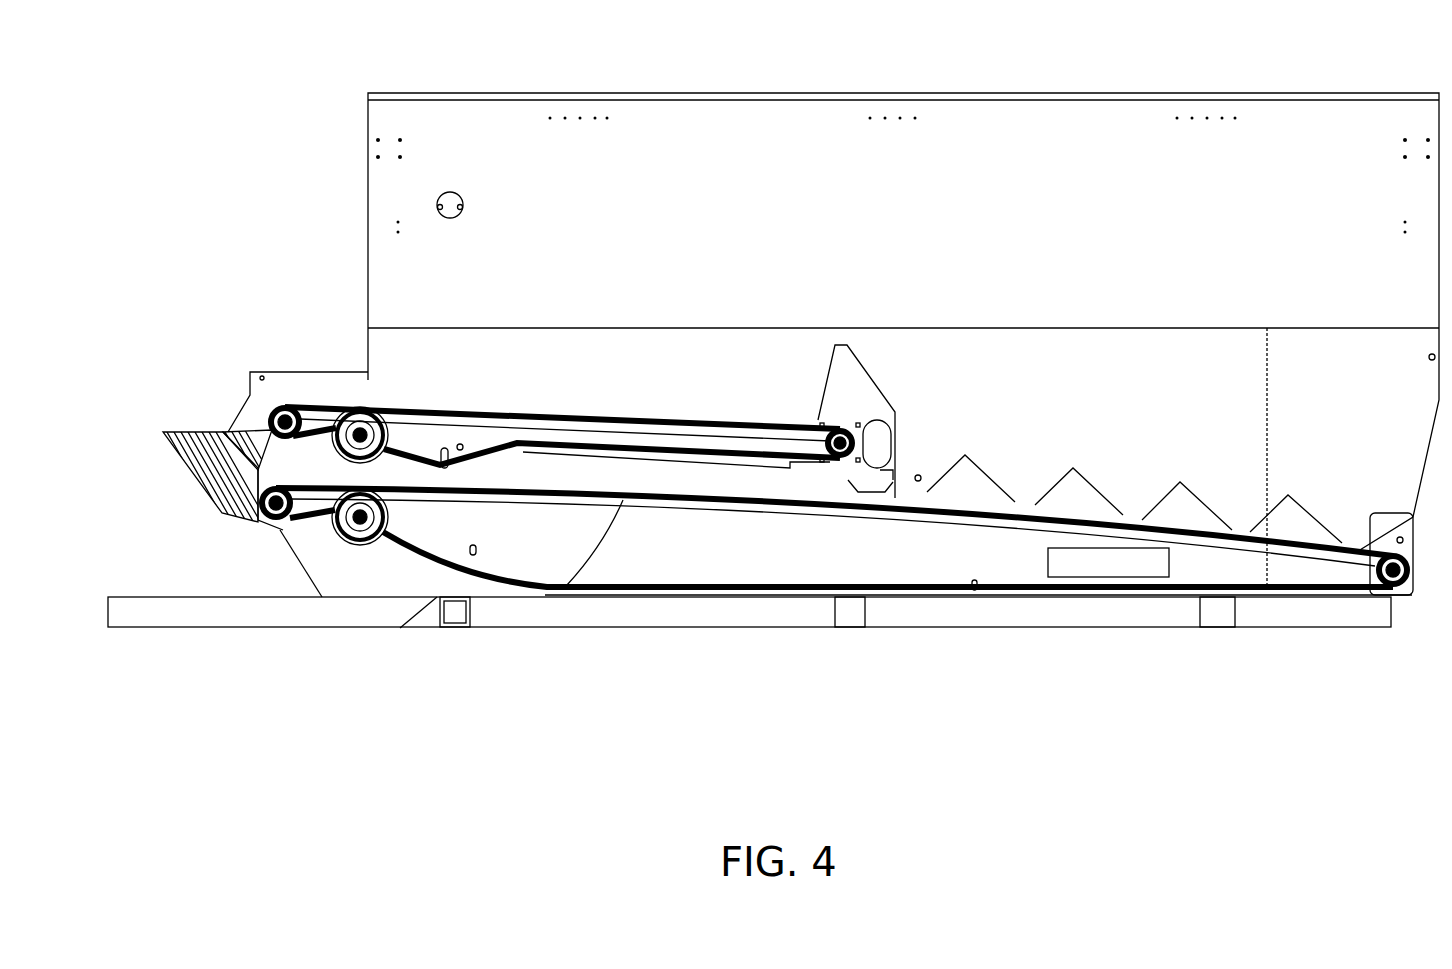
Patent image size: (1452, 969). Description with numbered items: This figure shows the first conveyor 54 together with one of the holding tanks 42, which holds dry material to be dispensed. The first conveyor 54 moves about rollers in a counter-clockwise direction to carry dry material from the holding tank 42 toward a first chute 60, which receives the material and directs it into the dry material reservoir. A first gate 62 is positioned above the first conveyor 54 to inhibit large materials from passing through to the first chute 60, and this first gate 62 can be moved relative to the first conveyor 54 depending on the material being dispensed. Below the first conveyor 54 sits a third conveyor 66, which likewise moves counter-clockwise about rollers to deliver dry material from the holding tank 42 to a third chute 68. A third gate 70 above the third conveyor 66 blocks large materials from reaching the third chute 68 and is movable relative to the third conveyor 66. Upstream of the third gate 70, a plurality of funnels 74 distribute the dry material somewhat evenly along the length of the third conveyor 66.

The holding tank 42 is at (873, 128).
The first conveyor 54 is at (550, 392).
The first chute 60 is at (229, 430).
The first gate 62 is at (380, 386).
The third conveyor 66 is at (625, 500).
The third chute 68 is at (193, 483).
The third gate 70 is at (905, 480).
The funnels 74 is at (1000, 462).